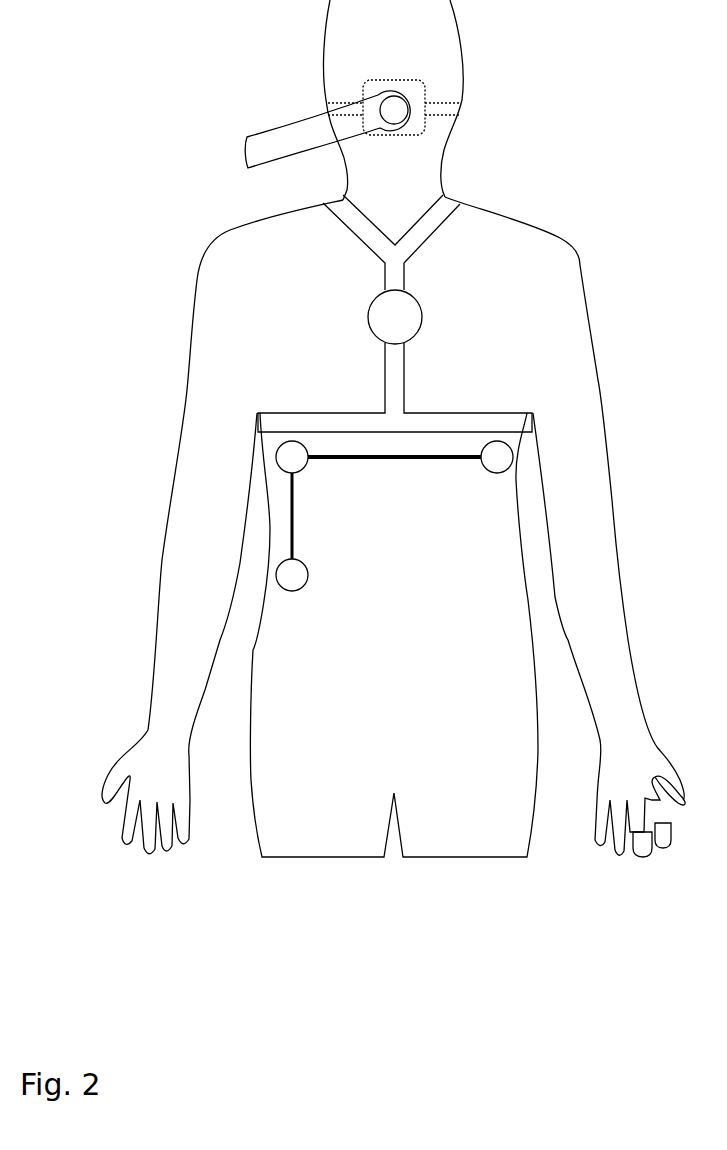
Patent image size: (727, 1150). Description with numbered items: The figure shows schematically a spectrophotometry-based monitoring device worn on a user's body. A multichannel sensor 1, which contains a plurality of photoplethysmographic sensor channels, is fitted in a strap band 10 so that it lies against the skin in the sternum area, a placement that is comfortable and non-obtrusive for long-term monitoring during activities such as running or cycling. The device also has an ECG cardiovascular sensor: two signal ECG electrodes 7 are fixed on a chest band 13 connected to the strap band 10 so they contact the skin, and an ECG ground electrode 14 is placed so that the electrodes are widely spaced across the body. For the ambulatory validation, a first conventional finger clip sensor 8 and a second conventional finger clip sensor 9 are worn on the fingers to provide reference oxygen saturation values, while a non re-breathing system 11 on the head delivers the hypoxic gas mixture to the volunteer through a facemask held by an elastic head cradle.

The multichannel sensor 1 is at (407, 317).
The signal ECG electrodes 7 is at (290, 457).
The first conventional finger clip sensor 8 is at (640, 855).
The second conventional finger clip sensor 9 is at (663, 842).
The strap band 10 is at (440, 212).
The non re-breathing system 11 is at (422, 98).
The chest band 13 is at (468, 420).
The ECG ground electrode 14 is at (292, 575).